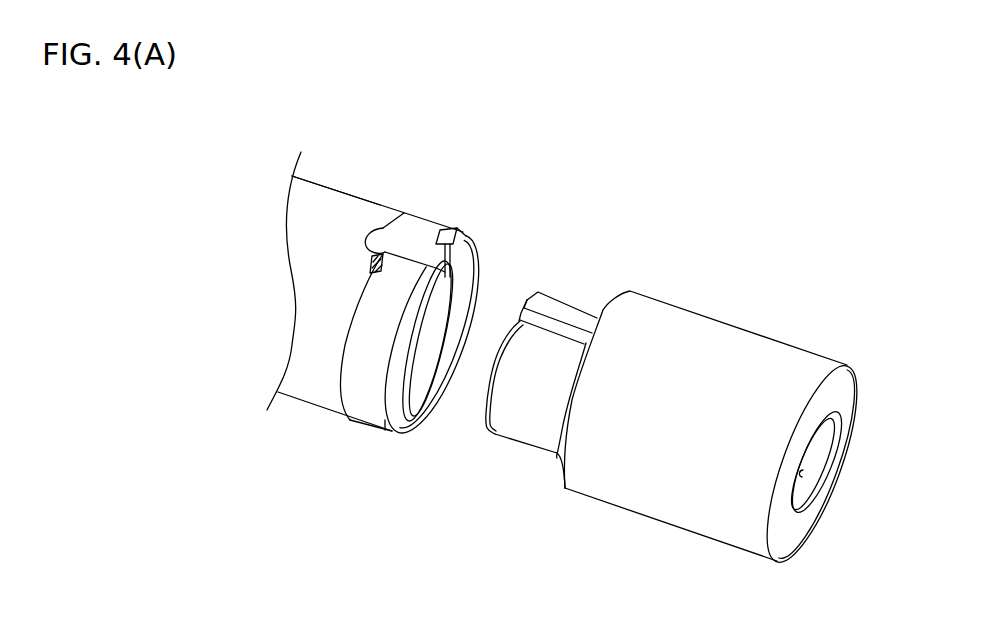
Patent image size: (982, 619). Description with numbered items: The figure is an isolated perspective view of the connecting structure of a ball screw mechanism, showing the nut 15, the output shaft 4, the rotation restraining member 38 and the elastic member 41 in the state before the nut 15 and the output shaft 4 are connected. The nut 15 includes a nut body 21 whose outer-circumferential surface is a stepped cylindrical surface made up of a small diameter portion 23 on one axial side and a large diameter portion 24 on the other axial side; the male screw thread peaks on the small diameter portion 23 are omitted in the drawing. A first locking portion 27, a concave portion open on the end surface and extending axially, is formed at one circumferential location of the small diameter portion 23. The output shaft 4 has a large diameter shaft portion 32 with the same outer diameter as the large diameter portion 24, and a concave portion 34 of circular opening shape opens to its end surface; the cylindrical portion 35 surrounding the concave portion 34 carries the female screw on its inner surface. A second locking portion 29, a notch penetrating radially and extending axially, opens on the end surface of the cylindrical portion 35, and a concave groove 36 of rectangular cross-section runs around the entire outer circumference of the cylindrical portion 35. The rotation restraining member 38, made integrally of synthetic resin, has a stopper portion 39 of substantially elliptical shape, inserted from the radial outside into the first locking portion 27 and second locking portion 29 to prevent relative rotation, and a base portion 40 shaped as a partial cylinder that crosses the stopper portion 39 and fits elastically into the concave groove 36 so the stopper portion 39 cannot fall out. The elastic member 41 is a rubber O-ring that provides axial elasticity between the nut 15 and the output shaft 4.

The output shaft 4 is at (312, 240).
The nut 15 is at (678, 389).
The nut body 21 is at (718, 340).
The small diameter portion 23 is at (520, 440).
The large diameter portion 24 is at (658, 502).
The first locking portion 27 is at (548, 316).
The second locking portion 29 is at (464, 237).
The large diameter shaft portion 32 is at (314, 318).
The concave portion 34 is at (434, 405).
The cylindrical portion 35 is at (392, 420).
The concave groove 36 is at (341, 386).
The rotation restraining member 38 is at (407, 184).
The stopper portion 39 is at (375, 240).
The base portion 40 is at (418, 233).
The elastic member 41 is at (587, 323).